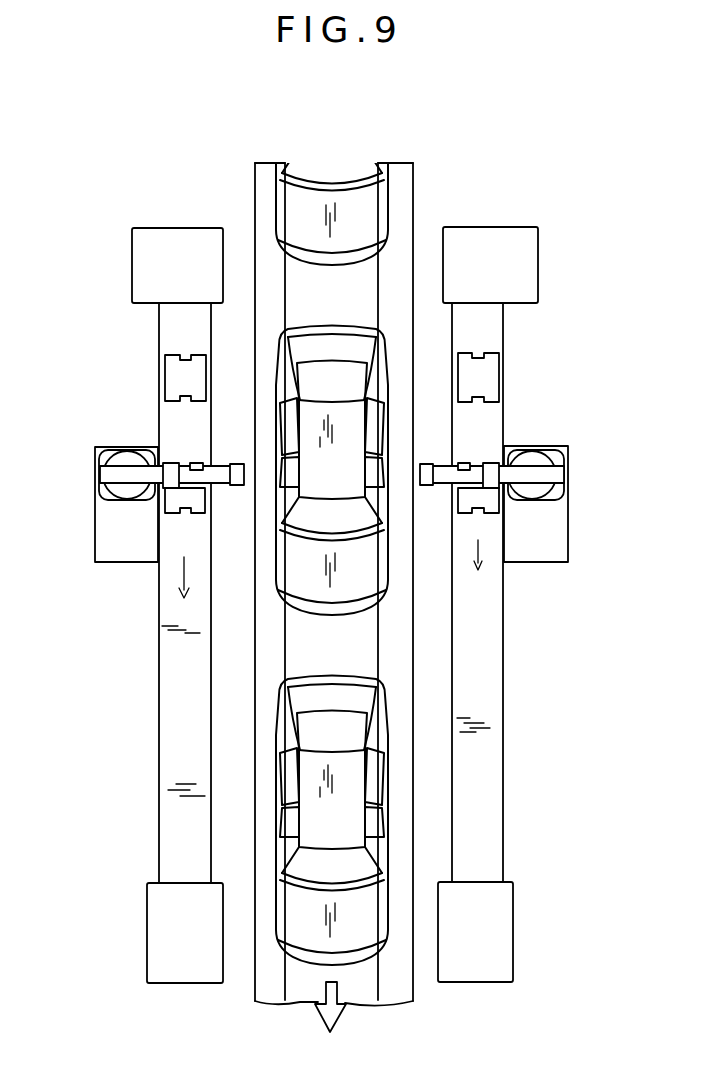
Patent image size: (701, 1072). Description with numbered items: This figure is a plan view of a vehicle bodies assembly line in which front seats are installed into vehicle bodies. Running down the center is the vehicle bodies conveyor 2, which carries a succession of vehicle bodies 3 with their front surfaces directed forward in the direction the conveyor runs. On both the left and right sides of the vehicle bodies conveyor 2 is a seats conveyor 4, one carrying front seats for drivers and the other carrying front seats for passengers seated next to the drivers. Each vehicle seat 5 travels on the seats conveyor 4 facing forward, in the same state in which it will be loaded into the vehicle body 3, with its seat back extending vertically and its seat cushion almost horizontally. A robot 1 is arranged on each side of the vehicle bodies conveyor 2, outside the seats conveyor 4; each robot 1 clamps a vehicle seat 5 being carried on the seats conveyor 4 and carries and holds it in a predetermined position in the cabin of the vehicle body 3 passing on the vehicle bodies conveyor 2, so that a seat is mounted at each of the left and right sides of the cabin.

The robot 1 is at (100, 442).
The vehicle bodies conveyor 2 is at (368, 275).
The vehicle body 3 is at (380, 362).
The seats conveyor 4 is at (178, 710).
The vehicle seat 5 is at (178, 375).